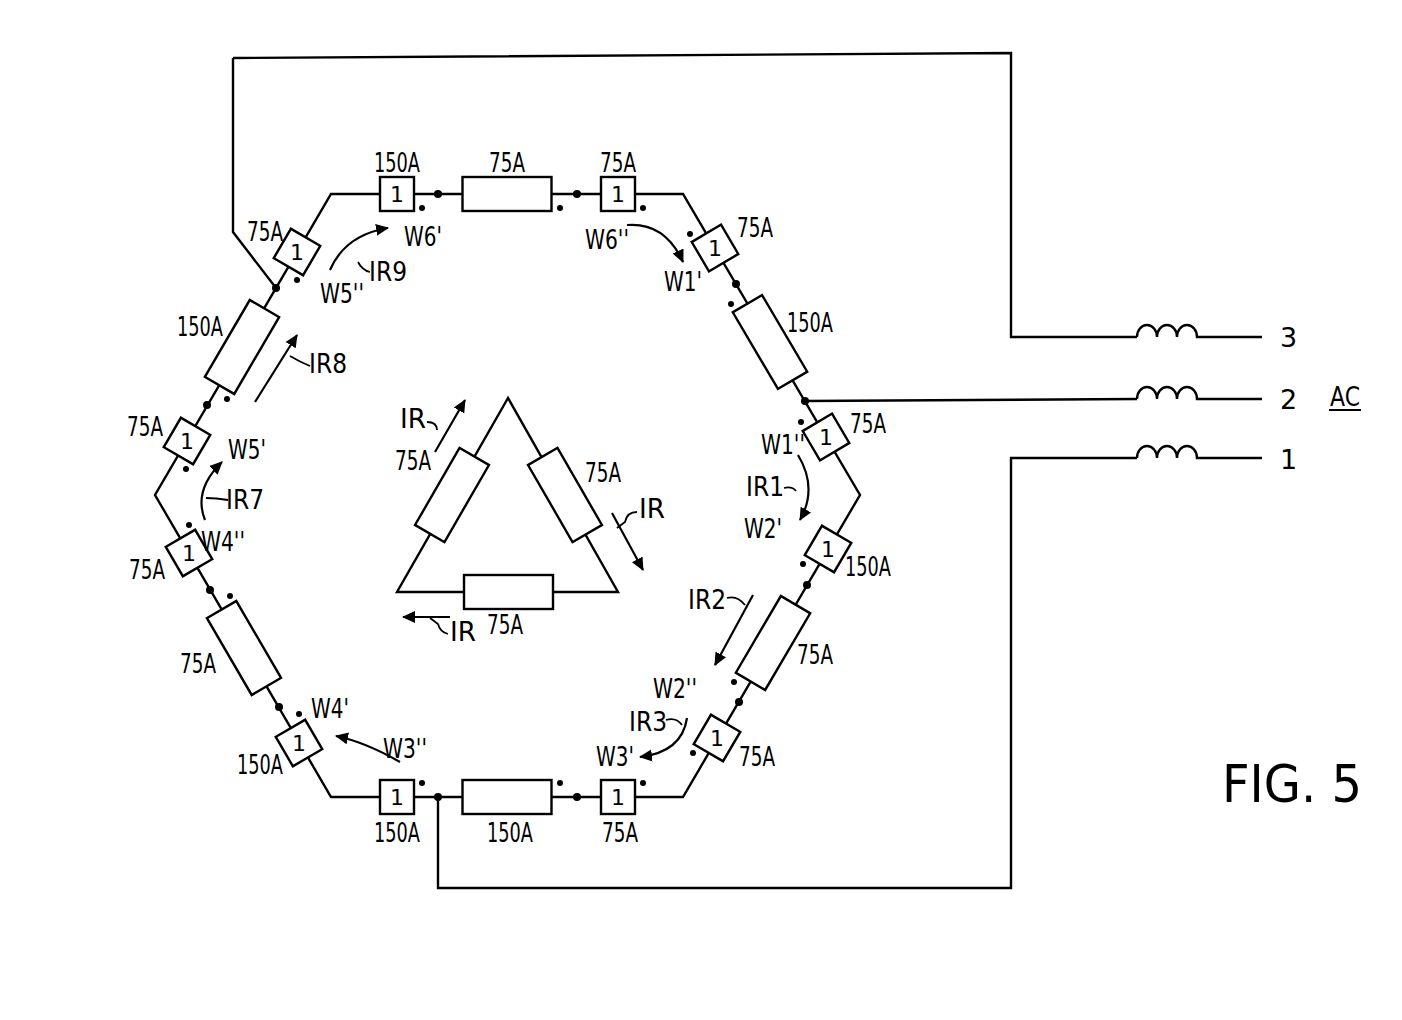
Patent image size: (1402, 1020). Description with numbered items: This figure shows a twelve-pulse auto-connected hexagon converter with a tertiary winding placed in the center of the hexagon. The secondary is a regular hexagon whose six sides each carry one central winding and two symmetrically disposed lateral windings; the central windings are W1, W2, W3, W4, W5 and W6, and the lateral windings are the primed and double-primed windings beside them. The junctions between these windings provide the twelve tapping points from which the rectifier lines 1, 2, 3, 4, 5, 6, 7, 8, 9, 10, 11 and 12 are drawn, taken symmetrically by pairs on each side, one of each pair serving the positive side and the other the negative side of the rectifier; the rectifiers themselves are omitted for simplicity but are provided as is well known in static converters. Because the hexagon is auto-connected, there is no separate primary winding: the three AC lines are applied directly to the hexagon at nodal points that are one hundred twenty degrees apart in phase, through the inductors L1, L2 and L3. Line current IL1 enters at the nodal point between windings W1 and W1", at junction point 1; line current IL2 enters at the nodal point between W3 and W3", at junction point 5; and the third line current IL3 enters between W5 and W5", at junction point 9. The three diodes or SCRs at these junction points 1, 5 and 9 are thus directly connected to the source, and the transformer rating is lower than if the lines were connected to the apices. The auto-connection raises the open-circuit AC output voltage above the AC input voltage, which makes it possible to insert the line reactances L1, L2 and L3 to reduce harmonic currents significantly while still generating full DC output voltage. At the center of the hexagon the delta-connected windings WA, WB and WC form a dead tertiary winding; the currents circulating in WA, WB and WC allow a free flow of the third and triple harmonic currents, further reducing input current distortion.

The line 1 is at (805, 401).
The line 2 is at (807, 585).
The line 3 is at (739, 702).
The line 4 is at (577, 797).
The line 5 is at (438, 797).
The line 6 is at (279, 707).
The line 7 is at (210, 590).
The line 8 is at (207, 405).
The line 9 is at (276, 288).
The line 10 is at (438, 194).
The line 11 is at (577, 194).
The line 12 is at (736, 284).
The central winding W1 is at (761, 342).
The central winding W2 is at (769, 627).
The central winding W3 is at (513, 782).
The central winding W4 is at (245, 644).
The central winding W5 is at (257, 353).
The central winding W6 is at (513, 212).
The delta-connected winding WA is at (562, 495).
The delta-connected winding WB is at (508, 573).
The delta-connected winding WC is at (456, 495).
The inductor L1 is at (1167, 386).
The inductor L2 is at (1167, 447).
The inductor L3 is at (1167, 320).
The current IL1 is at (911, 401).
The current IL2 is at (438, 840).
The current IL3 is at (233, 127).